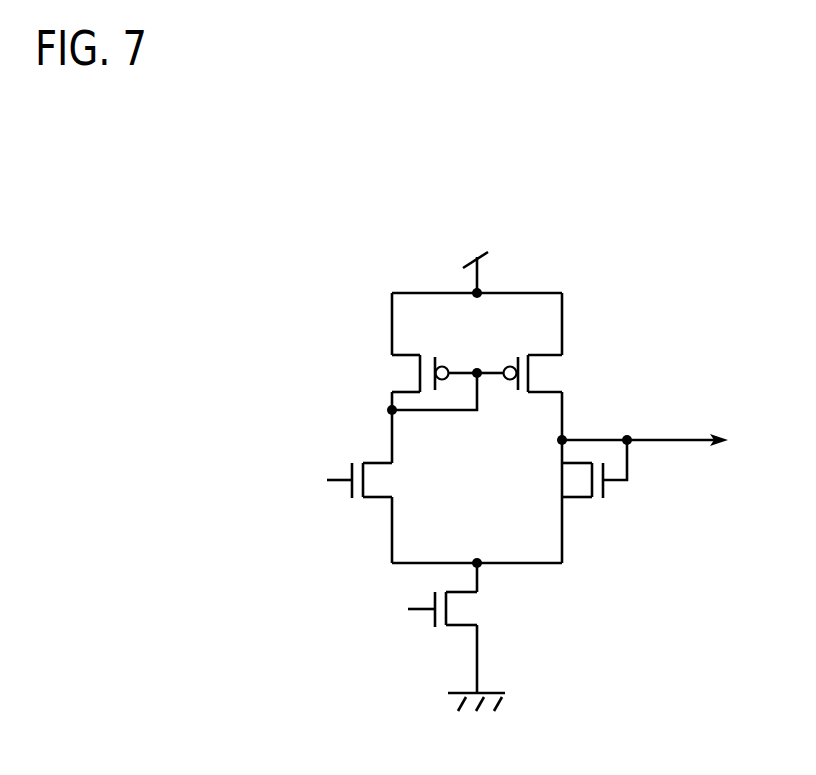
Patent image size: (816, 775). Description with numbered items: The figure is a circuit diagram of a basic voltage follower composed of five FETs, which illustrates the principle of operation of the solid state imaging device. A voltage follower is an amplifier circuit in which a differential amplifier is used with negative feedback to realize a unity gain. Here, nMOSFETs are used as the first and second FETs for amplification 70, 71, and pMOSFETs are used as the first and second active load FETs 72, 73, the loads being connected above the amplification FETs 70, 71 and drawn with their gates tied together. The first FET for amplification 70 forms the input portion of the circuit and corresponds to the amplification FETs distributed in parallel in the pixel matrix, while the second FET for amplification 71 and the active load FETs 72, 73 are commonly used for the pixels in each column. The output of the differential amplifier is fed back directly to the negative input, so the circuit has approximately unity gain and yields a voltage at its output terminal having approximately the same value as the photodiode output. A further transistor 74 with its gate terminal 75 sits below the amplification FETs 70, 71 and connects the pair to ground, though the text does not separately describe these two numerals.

The first FET for amplification 70 is at (380, 505).
The second FET for amplification 71 is at (577, 505).
The first active load FET 72 is at (400, 375).
The second active load FET 73 is at (542, 372).
The N-channel MOS transistor 74 is at (467, 611).
The gate terminal of transistor 74 75 is at (420, 615).